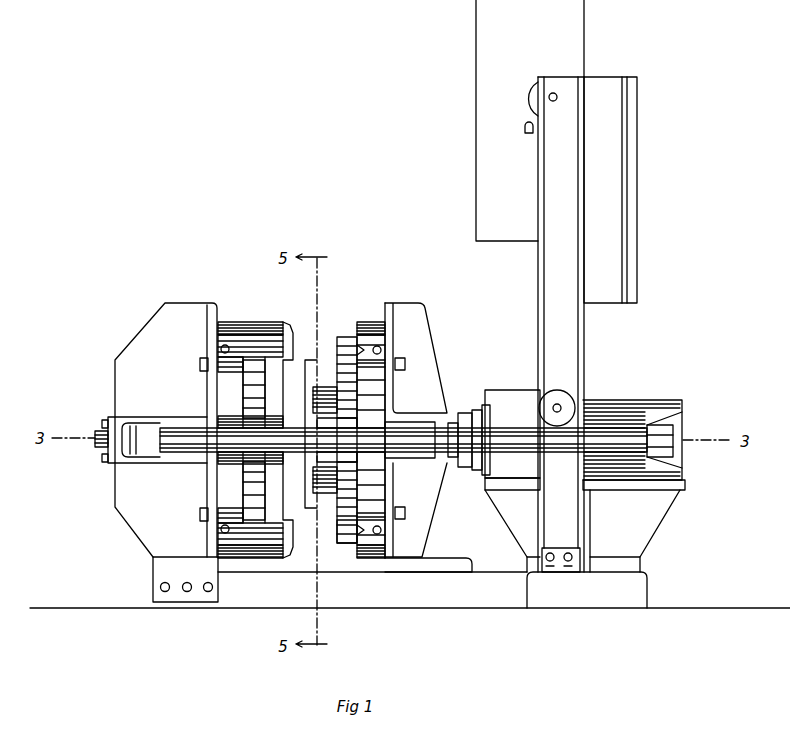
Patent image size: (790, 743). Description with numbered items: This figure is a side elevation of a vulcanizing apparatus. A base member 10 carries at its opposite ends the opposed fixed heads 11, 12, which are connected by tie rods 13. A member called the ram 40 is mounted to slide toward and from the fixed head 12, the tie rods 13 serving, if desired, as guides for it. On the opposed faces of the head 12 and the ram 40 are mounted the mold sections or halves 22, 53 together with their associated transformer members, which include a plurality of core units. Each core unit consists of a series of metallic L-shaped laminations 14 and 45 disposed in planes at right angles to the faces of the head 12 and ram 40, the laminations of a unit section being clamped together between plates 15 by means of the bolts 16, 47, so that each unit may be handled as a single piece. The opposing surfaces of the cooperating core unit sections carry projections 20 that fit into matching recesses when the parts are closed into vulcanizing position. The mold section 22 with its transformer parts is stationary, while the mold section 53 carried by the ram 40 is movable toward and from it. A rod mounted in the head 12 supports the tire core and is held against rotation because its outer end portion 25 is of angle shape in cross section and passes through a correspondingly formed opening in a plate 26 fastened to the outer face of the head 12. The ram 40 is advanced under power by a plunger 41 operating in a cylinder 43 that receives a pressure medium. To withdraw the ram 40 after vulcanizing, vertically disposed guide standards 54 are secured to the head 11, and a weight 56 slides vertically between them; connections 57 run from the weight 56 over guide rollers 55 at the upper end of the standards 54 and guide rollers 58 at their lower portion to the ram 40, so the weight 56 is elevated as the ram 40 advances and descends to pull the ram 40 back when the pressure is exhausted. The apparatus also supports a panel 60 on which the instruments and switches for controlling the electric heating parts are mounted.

The base member 10 is at (302, 590).
The fixed head 11 is at (633, 523).
The fixed head 12 is at (165, 365).
The tie rods 13 is at (480, 445).
The laminations 14 is at (247, 331).
The plates 15 is at (284, 392).
The bolts 16 is at (221, 349).
The projections 20 is at (291, 333).
The mold section 22 is at (252, 407).
The outer end portion of the rod 25 is at (97, 442).
The plate 26 is at (106, 462).
The ram 40 is at (420, 378).
The plunger 41 is at (452, 422).
The cylinder 43 is at (510, 408).
The laminations 45 is at (370, 388).
The bolts 47 is at (367, 350).
The mold section 53 is at (348, 527).
The guide standards 54 is at (560, 341).
The guide rollers 55 is at (552, 74).
The weight 56 is at (505, 60).
The connections 57 is at (524, 115).
The guide rollers 58 is at (567, 393).
The panel 60 is at (600, 172).